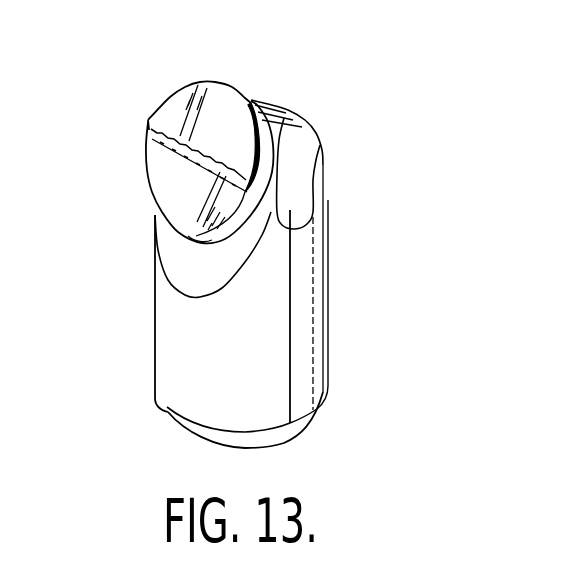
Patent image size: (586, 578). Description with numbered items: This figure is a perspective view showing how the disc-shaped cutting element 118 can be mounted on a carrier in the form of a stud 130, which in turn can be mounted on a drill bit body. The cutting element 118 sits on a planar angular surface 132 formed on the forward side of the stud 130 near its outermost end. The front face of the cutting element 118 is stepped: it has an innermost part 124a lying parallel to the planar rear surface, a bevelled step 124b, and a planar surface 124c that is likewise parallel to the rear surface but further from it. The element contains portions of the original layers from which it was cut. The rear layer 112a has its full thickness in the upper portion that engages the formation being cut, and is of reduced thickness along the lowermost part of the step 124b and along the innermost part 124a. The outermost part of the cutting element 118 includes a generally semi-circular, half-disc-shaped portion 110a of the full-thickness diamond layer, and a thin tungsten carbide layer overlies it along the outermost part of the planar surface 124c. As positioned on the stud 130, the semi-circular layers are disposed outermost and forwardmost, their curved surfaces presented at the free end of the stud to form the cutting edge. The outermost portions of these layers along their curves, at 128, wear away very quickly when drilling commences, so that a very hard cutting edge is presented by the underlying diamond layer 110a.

The half-disc-shaped portion of diamond layer 110a is at (257, 140).
The rear layer 112a is at (258, 180).
The cutting element 118 is at (144, 148).
The innermost part of front surface 124a is at (183, 200).
The bevelled step 124b is at (175, 155).
The planar surface 124c is at (178, 112).
The outermost portions of layers along curves 128 is at (241, 93).
The stud 130 is at (300, 327).
The planar angular surface 132 is at (185, 248).